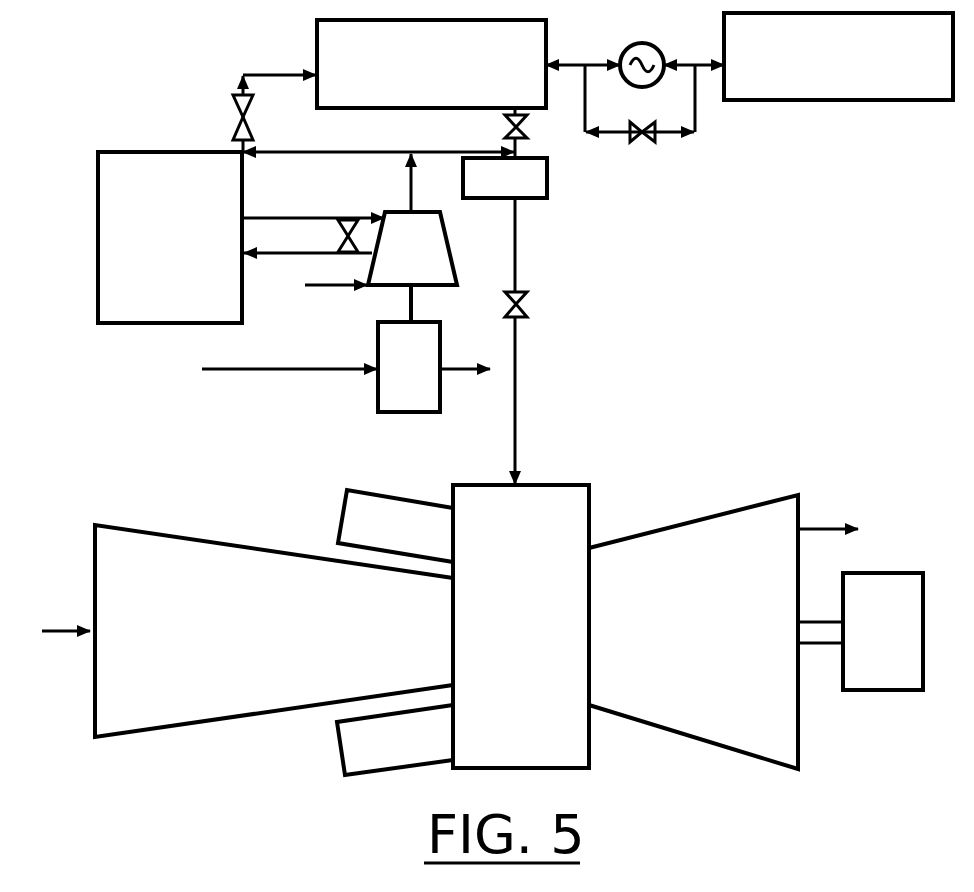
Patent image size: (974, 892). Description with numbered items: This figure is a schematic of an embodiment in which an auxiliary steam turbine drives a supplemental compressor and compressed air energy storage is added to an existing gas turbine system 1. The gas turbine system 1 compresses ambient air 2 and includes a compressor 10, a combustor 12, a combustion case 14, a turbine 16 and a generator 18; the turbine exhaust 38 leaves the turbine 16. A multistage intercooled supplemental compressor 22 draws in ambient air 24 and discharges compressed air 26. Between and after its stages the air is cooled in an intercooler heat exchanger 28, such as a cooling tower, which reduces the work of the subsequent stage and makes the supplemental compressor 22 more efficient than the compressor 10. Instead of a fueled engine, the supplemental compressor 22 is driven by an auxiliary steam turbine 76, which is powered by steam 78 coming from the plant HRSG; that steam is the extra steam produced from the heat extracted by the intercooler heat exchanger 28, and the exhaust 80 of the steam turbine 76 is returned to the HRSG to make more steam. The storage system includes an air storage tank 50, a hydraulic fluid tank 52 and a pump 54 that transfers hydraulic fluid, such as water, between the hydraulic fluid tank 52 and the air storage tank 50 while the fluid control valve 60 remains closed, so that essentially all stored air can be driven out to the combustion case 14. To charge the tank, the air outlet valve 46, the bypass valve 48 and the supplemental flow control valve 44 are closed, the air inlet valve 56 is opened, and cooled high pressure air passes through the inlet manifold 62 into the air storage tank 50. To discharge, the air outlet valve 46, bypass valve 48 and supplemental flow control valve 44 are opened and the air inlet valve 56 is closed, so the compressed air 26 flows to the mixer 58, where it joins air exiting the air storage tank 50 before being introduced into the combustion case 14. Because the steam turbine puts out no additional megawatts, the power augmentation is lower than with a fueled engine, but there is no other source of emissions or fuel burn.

The gas turbine system 1 is at (110, 478).
The ambient air 2 is at (57, 632).
The compressor 10 is at (205, 535).
The combustor 12 is at (392, 498).
The combustion case 14 is at (476, 481).
The turbine 16 is at (708, 511).
The generator 18 is at (888, 700).
The supplemental compressor 22 is at (455, 236).
The ambient air 24 is at (312, 292).
The compressed air 26 is at (404, 179).
The intercooler heat exchanger 28 is at (92, 194).
The exhaust 38 is at (830, 521).
The supplemental flow control valve 44 is at (530, 299).
The air outlet valve 46 is at (527, 132).
The bypass valve 48 is at (335, 227).
The air storage tank 50 is at (310, 56).
The hydraulic fluid tank 52 is at (845, 104).
The pump 54 is at (645, 42).
The air inlet valve 56 is at (232, 117).
The mixer 58 is at (544, 204).
The fluid control valve 60 is at (653, 146).
The inlet manifold 62 is at (288, 82).
The auxiliary steam turbine 76 is at (372, 410).
The steam 78 is at (245, 378).
The exhaust 80 is at (450, 361).